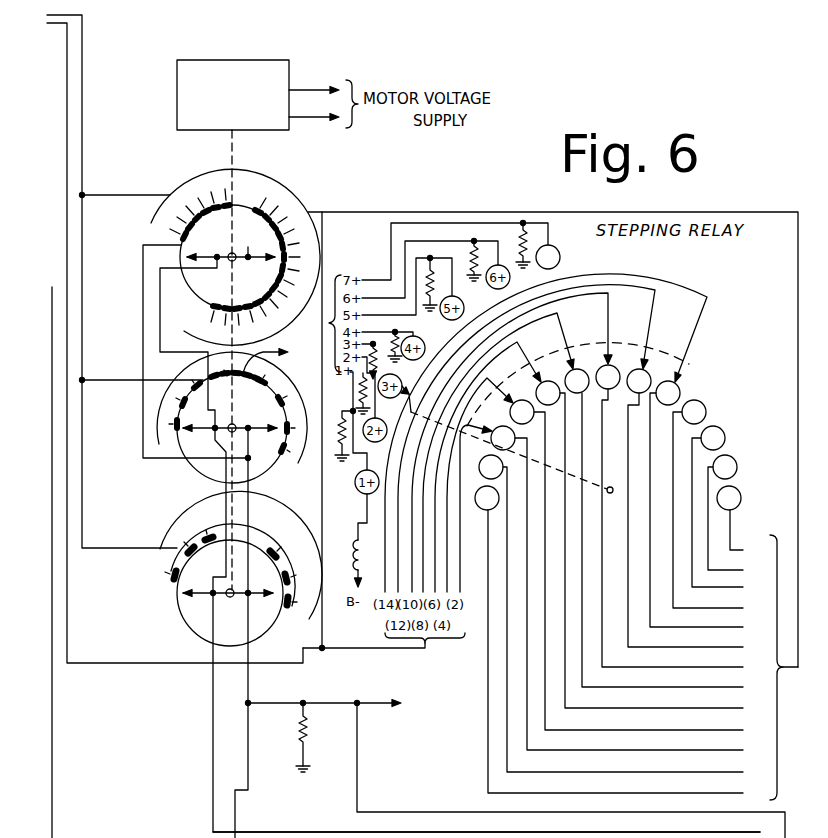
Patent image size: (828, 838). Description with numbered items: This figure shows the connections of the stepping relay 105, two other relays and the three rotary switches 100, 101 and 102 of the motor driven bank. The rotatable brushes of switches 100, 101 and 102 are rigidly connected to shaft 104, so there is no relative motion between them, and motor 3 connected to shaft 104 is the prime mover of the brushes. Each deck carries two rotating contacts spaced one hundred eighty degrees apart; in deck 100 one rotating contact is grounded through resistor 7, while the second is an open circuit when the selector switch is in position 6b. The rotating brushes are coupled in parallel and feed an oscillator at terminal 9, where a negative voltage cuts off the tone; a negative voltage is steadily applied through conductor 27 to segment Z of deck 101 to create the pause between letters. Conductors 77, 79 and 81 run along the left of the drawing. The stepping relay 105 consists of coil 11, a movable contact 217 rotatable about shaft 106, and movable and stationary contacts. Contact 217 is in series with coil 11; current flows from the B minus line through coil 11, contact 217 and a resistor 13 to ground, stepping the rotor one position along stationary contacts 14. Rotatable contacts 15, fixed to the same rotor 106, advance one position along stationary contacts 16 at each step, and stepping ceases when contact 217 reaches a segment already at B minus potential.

The motor 3 is at (180, 58).
The shaft 104 is at (236, 148).
The conductor 77 is at (84, 40).
The conductor 79 is at (67, 128).
The conductor 81 is at (52, 285).
The rotary switch 100 is at (231, 315).
The rotary switch 101 is at (458, 588).
The rotary switch 102 is at (238, 568).
The conductor 27 is at (276, 346).
The resistor 7 is at (310, 746).
The terminal 9 is at (395, 709).
The coil 11 is at (364, 554).
The resistor 13 is at (342, 411).
The stationary contacts 14 is at (561, 257).
The rotatable contacts 15 is at (681, 387).
The stationary contacts 16 is at (707, 409).
The stepping relay 105 is at (579, 537).
The shaft 106 is at (610, 486).
The movable contact 217 is at (408, 390).
The switch position 6b is at (498, 825).